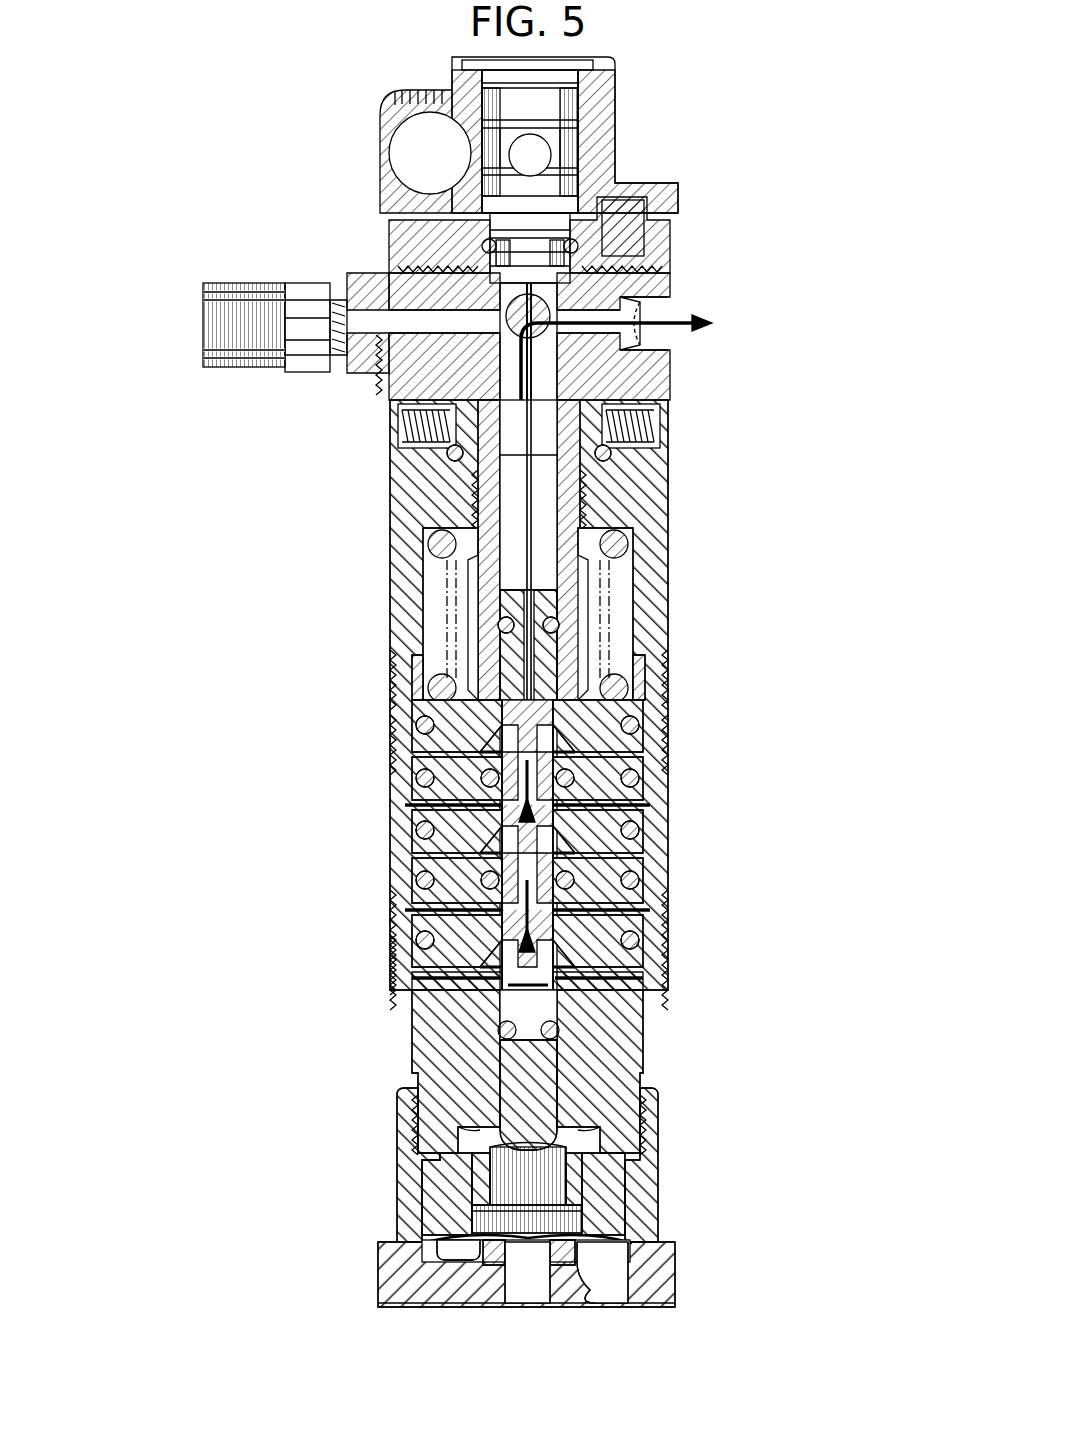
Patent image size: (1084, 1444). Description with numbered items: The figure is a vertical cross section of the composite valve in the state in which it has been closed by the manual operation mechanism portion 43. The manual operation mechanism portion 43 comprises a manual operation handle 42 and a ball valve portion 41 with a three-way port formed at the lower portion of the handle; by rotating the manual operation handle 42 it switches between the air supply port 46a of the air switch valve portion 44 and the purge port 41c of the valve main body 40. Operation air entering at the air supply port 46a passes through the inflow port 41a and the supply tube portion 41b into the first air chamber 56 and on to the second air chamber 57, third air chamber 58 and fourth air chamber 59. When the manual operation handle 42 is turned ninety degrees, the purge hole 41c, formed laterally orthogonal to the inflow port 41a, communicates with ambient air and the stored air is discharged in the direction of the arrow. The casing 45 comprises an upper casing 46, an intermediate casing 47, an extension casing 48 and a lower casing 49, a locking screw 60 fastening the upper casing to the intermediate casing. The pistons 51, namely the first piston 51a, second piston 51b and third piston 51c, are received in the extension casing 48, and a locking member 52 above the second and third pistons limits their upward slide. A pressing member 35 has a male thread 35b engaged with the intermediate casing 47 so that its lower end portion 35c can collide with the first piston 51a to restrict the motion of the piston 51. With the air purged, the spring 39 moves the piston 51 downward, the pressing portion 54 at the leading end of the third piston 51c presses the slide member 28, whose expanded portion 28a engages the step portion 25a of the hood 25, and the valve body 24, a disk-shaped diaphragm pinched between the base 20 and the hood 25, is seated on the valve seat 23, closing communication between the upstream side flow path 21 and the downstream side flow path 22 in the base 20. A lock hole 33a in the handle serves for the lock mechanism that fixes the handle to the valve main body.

The base 20 is at (402, 1117).
The upstream side flow path 21 is at (535, 1293).
The downstream side flow path 22 is at (605, 1293).
The valve seat 23 is at (497, 1253).
The valve body 24 is at (395, 1253).
The hood 25 is at (440, 1167).
The step portion 25a is at (573, 1207).
The slide member 28 is at (540, 1177).
The expanded portion 28a is at (490, 1212).
The lock hole 33a is at (413, 147).
The pressing member 35 is at (582, 627).
The male thread 35b is at (567, 543).
The lower end portion 35c is at (593, 687).
The spring 39 is at (447, 692).
The valve main body 40 is at (565, 163).
The ball valve portion 41 is at (574, 357).
The inflow port 41a is at (388, 400).
The supply tube portion 41b is at (507, 433).
The purge port 41c is at (648, 293).
The manual operation handle 42 is at (600, 100).
The manual operation mechanism portion 43 is at (600, 130).
The air switch valve portion 44 is at (490, 285).
The casing 45 is at (688, 727).
The upper casing 46 is at (405, 240).
The air supply port 46a is at (372, 278).
The intermediate casing 47 is at (637, 491).
The extension casing 48 is at (393, 977).
The lower casing 49 is at (623, 1013).
The piston 51 is at (491, 845).
The first piston 51a is at (423, 747).
The second piston 51b is at (420, 847).
The third piston 51c is at (423, 930).
The locking member 52 is at (627, 800).
The valve stem 54 is at (547, 1118).
The first air chamber 56 is at (510, 572).
The second air chamber 57 is at (641, 808).
The third air chamber 58 is at (643, 863).
The fourth air chamber 59 is at (600, 973).
The locking screw 60 is at (650, 410).